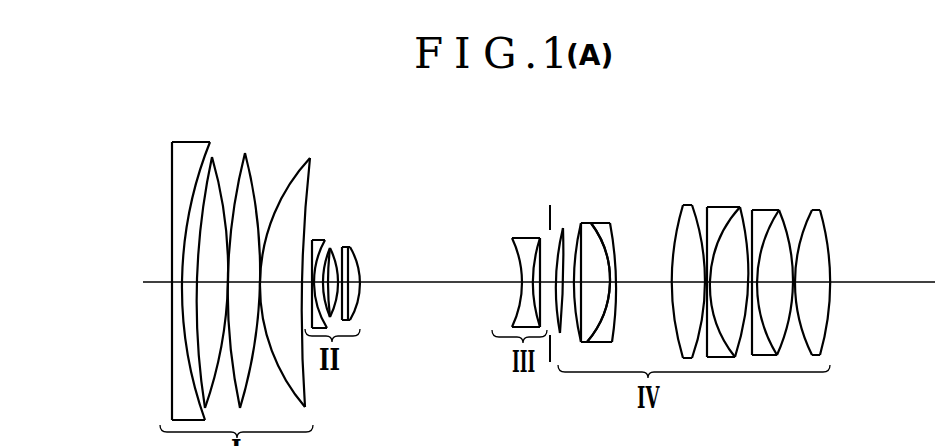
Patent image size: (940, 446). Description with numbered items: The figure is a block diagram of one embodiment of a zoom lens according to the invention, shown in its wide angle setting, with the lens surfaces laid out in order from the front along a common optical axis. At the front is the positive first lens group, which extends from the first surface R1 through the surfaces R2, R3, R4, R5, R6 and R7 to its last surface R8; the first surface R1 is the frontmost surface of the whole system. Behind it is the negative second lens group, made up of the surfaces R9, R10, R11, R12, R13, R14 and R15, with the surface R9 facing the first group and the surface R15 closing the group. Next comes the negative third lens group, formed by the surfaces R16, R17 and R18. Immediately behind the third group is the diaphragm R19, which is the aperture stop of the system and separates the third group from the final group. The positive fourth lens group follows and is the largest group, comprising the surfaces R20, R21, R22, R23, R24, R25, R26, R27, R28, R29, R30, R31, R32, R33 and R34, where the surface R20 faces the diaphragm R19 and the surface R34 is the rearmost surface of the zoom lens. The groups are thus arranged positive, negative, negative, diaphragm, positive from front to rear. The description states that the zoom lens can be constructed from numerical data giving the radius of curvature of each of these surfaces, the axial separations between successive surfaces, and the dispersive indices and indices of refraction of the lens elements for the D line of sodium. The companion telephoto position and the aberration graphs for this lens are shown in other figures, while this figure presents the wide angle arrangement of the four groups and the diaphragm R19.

The first surface of first lens group R1 is at (172, 142).
The surface of first lens group R2 is at (208, 163).
The surface of first lens group R3 is at (203, 160).
The surface of first lens group R4 is at (210, 155).
The surface of first lens group R5 is at (243, 156).
The surface of first lens group R6 is at (246, 153).
The surface of first lens group R7 is at (300, 165).
The last surface of first lens group R8 is at (309, 158).
The first surface of second lens group R9 is at (312, 239).
The surface of second lens group R10 is at (325, 240).
The surface of second lens group R11 is at (331, 247).
The surface of second lens group R12 is at (333, 247).
The surface of second lens group R13 is at (336, 247).
The surface of second lens group R14 is at (346, 247).
The last surface of second lens group R15 is at (355, 248).
The first surface of third lens group R16 is at (512, 239).
The surface of third lens group R17 is at (532, 239).
The last surface of third lens group R18 is at (550, 237).
The diaphragm R19 is at (557, 229).
The first surface of fourth lens group R20 is at (563, 230).
The surface of fourth lens group R21 is at (581, 224).
The surface of fourth lens group R22 is at (591, 224).
The surface of fourth lens group R23 is at (609, 223).
The surface of fourth lens group R24 is at (612, 224).
The surface of fourth lens group R25 is at (683, 206).
The surface of fourth lens group R26 is at (688, 205).
The surface of fourth lens group R27 is at (707, 208).
The surface of fourth lens group R28 is at (736, 207).
The surface of fourth lens group R29 is at (745, 208).
The surface of fourth lens group R30 is at (756, 210).
The surface of fourth lens group R31 is at (779, 211).
The surface of fourth lens group R32 is at (786, 211).
The surface of fourth lens group R33 is at (813, 211).
The last surface of fourth lens group R34 is at (823, 210).